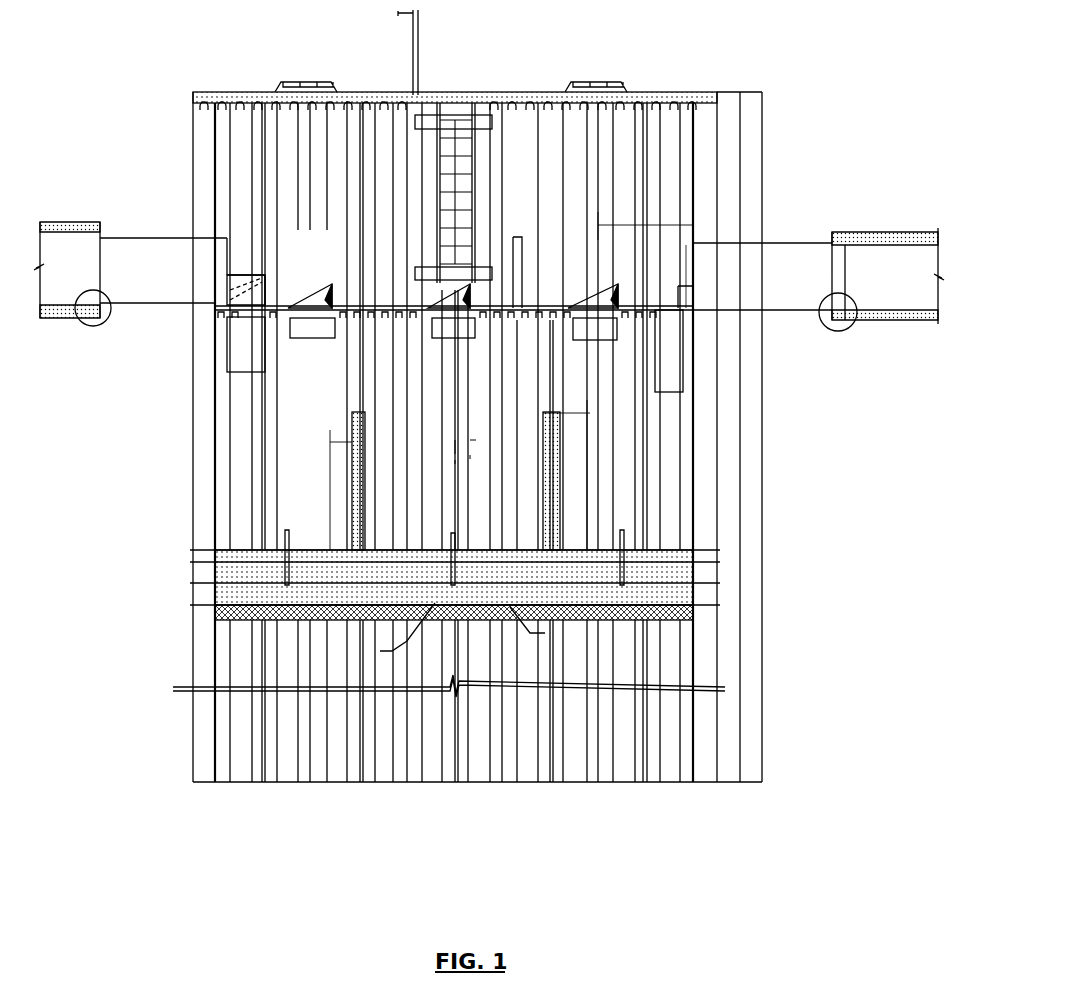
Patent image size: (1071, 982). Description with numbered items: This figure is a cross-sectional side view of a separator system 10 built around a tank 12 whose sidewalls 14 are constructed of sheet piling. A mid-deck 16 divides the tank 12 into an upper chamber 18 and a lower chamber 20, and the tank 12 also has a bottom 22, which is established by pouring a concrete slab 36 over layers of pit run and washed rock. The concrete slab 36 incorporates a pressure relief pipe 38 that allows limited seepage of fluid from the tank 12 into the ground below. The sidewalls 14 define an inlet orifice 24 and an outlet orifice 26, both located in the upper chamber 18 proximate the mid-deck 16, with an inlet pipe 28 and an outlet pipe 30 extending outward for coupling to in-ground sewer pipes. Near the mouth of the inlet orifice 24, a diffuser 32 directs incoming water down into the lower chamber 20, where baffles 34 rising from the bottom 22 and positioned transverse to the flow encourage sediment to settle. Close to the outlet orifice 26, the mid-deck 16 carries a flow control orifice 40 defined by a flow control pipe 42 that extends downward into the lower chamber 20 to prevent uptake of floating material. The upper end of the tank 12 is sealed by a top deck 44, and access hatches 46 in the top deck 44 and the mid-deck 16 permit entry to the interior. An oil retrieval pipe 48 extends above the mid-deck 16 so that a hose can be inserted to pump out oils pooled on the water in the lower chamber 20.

The separator system 10 is at (160, 875).
The tank 12 is at (681, 56).
The sidewalls 14 is at (719, 392).
The mid-deck 16 is at (382, 318).
The upper chamber 18 is at (398, 182).
The lower chamber 20 is at (453, 417).
The bottom 22 is at (430, 547).
The inlet orifice 24 is at (237, 256).
The outlet orifice 26 is at (688, 263).
The inlet pipe 28 is at (155, 237).
The outlet pipe 30 is at (790, 254).
The diffuser 32 is at (238, 340).
The baffles 34 is at (365, 415).
The concrete slab 36 is at (720, 579).
The pressure relief pipe 38 is at (448, 538).
The flow control orifice 40 is at (666, 303).
The flow control pipe 42 is at (668, 356).
The top deck 44 is at (228, 92).
The access hatches 46 is at (454, 90).
The oil retrieval pipe 48 is at (510, 235).